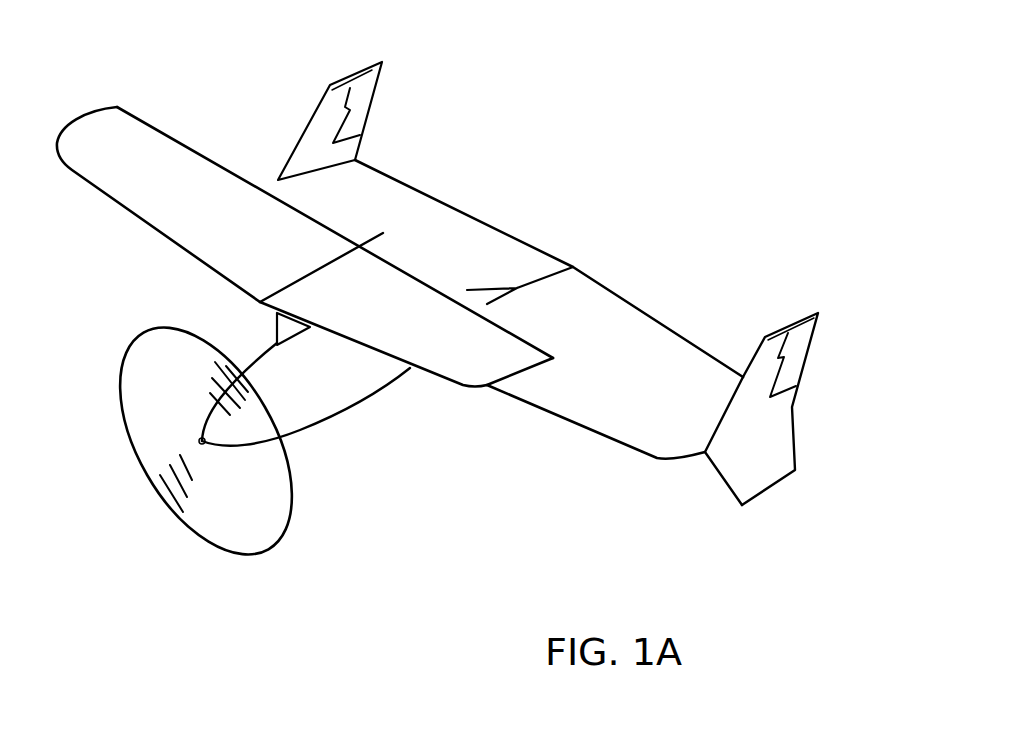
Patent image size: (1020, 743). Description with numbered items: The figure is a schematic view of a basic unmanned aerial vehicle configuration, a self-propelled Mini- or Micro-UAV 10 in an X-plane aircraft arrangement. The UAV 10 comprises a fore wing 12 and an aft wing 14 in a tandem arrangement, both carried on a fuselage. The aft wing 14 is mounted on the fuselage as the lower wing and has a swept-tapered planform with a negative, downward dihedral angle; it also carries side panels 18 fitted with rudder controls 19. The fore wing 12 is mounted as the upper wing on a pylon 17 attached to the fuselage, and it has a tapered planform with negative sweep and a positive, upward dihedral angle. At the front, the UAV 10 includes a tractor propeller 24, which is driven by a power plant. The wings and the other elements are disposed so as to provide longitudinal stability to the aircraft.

The Mini- or Micro-UAV 10 is at (600, 198).
The fore wing 12 is at (660, 340).
The aft wing 14 is at (130, 157).
The pylon 17 is at (277, 329).
The side panels 18 is at (765, 452).
The rudder controls 19 is at (798, 352).
The tractor propeller 24 is at (240, 483).